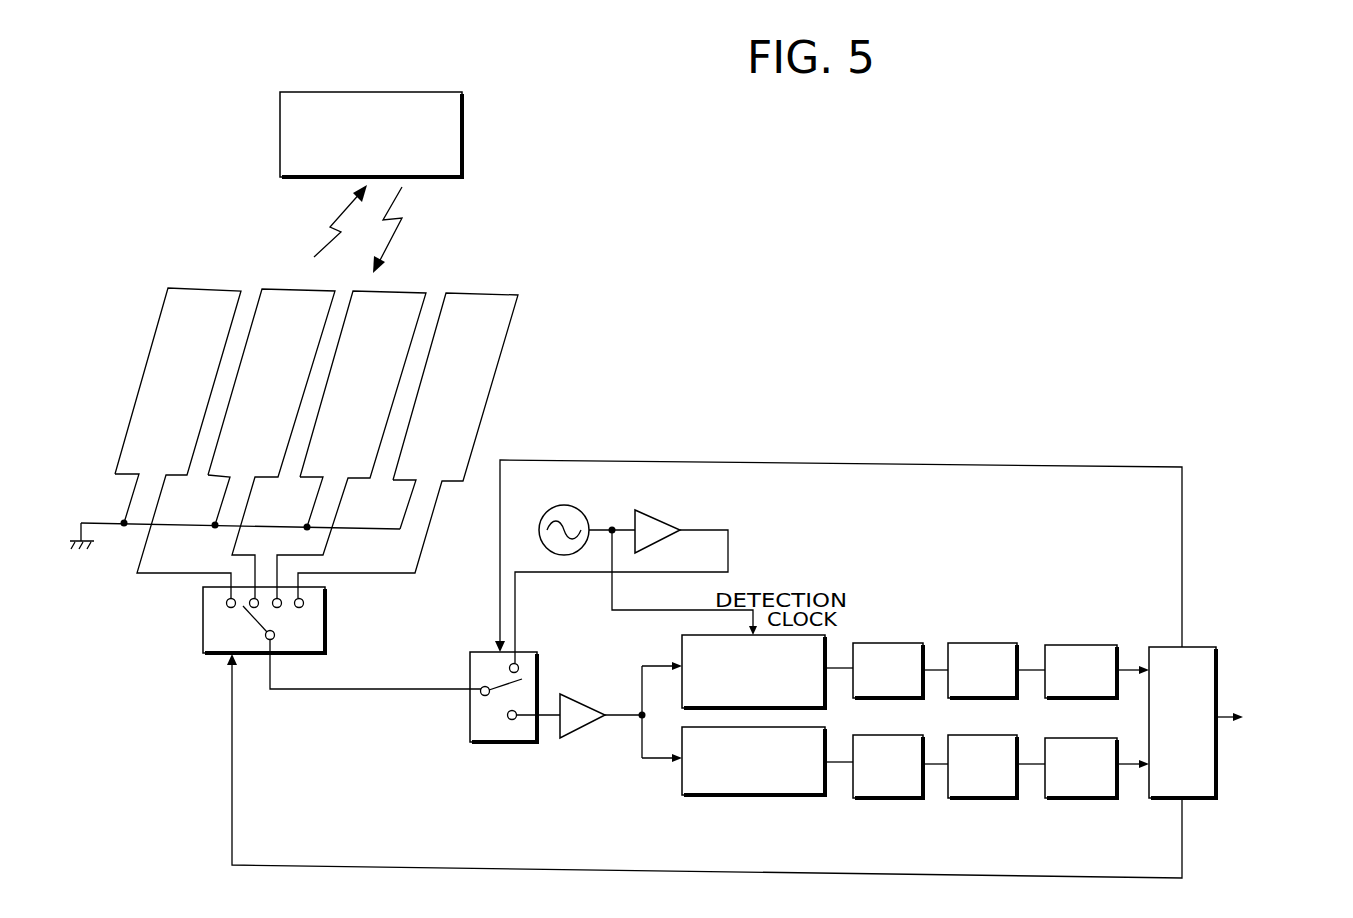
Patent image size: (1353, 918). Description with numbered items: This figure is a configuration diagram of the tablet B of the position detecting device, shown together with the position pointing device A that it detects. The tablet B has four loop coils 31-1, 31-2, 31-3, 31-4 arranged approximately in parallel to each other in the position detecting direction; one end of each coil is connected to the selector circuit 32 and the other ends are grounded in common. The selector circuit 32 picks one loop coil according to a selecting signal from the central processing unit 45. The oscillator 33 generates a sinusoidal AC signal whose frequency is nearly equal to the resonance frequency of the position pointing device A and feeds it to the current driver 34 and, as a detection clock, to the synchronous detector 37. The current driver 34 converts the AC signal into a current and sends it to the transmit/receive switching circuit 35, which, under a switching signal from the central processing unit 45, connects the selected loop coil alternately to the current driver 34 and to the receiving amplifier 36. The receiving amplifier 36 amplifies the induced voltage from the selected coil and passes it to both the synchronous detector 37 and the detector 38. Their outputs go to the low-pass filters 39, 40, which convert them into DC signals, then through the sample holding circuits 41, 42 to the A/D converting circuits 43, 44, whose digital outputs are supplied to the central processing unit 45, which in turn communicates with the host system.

The position pointing device A is at (383, 92).
The tablet B is at (741, 374).
The loop coil 31-1 is at (197, 288).
The loop coil 31-2 is at (293, 289).
The loop coil 31-3 is at (398, 291).
The loop coil 31-4 is at (493, 293).
The selector circuit 32 is at (203, 610).
The oscillator 33 is at (586, 510).
The current driver 34 is at (664, 516).
The transmit/receive switching circuit 35 is at (507, 742).
The receiving amplifier 36 is at (580, 735).
The synchronous detector 37 is at (682, 650).
The detector 38 is at (773, 795).
The low-pass filter 39 is at (888, 643).
The low-pass filter 40 is at (895, 798).
The sample holding circuit 41 is at (980, 643).
The sample holding circuit 42 is at (978, 798).
The A/D converting circuit 43 is at (1070, 645).
The A/D converting circuit 44 is at (1083, 798).
The central processing unit 45 is at (1158, 647).